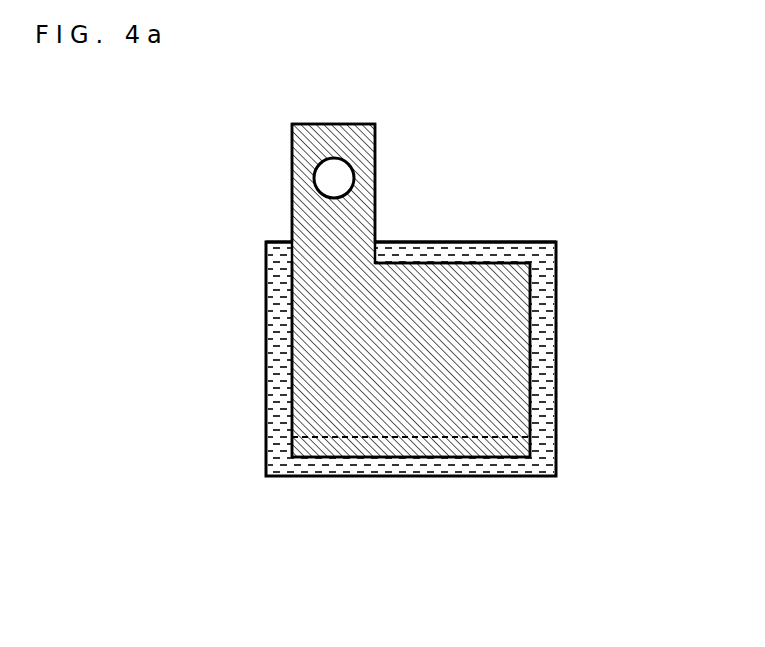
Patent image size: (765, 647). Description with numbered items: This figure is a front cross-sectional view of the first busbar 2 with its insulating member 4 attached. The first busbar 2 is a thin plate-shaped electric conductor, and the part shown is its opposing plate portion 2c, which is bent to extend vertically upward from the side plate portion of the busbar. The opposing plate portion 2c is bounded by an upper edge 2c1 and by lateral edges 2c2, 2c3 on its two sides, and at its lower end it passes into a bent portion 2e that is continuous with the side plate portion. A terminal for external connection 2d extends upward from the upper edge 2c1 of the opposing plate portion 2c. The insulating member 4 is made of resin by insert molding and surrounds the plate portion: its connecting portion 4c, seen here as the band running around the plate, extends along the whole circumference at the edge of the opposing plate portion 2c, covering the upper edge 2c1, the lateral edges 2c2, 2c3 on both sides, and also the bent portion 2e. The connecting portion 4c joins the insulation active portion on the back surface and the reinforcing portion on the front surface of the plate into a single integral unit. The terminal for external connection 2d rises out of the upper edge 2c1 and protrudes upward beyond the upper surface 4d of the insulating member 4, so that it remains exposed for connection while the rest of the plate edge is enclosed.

The first busbar 2 is at (404, 335).
The opposing plate portion 2c is at (408, 372).
The upper edge 2c1 is at (445, 265).
The lateral edge 2c2 is at (292, 340).
The lateral edge 2c3 is at (530, 340).
The terminal for external connection 2d is at (375, 158).
The bent portion 2e is at (500, 446).
The insulating member 4 is at (565, 239).
The connecting portion 4c is at (403, 252).
The upper surface 4d is at (522, 242).